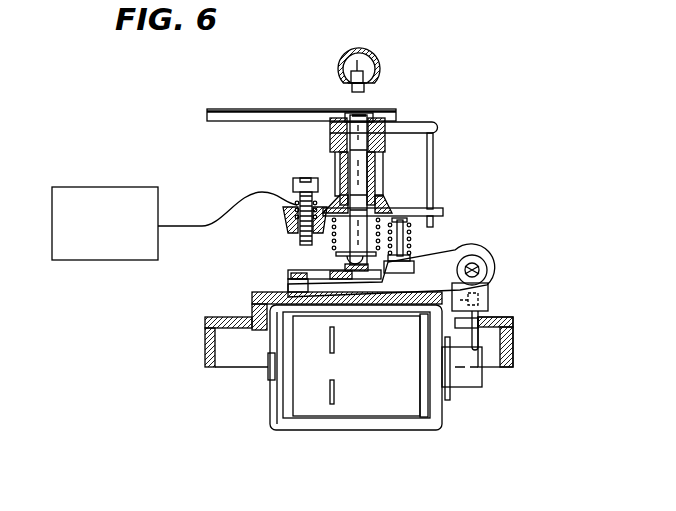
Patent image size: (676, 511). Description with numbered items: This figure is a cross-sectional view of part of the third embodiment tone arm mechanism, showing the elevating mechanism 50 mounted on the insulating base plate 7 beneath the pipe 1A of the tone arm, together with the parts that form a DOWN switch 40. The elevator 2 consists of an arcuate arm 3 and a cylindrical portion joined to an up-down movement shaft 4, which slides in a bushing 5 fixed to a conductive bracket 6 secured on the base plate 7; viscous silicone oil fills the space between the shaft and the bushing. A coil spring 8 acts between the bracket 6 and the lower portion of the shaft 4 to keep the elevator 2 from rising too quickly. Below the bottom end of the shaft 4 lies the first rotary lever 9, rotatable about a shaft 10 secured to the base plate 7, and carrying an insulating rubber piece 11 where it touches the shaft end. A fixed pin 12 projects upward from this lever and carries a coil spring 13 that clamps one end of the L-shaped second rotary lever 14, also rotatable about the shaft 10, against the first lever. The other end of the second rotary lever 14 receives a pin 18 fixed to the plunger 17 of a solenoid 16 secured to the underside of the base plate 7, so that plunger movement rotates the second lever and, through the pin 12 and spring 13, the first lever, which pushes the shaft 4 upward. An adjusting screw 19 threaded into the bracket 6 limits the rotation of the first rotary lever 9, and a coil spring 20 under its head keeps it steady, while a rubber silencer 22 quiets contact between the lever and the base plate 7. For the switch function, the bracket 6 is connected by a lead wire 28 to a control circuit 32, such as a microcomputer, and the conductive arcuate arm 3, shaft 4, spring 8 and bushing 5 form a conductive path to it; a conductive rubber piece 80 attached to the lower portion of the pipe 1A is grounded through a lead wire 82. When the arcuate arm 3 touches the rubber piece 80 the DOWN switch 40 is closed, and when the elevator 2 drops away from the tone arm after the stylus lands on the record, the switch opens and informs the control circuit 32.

The pipe 1A is at (347, 57).
The elevator 2 is at (424, 116).
The arcuate arm 3 is at (258, 108).
The up-down movement shaft 4 is at (366, 142).
The bushing 5 is at (376, 197).
The bracket 6 is at (283, 223).
The base plate 7 is at (206, 352).
The coil spring 8 is at (332, 243).
The first rotary lever 9 is at (298, 272).
The shaft 10 is at (482, 266).
The rubber piece 11 is at (348, 272).
The fixed pin 12 is at (412, 232).
The coil spring 13 is at (411, 250).
The second rotary lever 14 is at (408, 273).
The solenoid 16 is at (355, 400).
The plunger 17 is at (480, 378).
The pin 18 is at (479, 340).
The adjusting screw 19 is at (299, 178).
The coil spring 20 is at (296, 205).
The rubber silencer 22 is at (294, 279).
The lead wire 28 is at (185, 225).
The control circuit 32 is at (106, 187).
The DOWN switch 40 is at (392, 93).
The elevating mechanism 50 is at (500, 224).
The conductive rubber piece 80 is at (350, 89).
The lead wire 82 is at (360, 62).